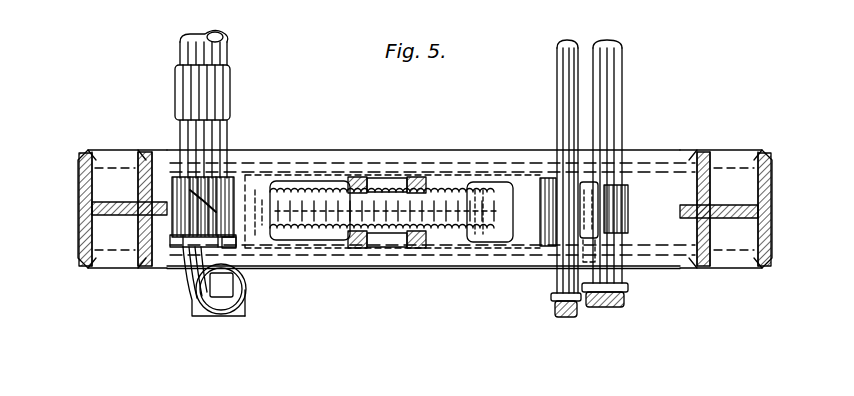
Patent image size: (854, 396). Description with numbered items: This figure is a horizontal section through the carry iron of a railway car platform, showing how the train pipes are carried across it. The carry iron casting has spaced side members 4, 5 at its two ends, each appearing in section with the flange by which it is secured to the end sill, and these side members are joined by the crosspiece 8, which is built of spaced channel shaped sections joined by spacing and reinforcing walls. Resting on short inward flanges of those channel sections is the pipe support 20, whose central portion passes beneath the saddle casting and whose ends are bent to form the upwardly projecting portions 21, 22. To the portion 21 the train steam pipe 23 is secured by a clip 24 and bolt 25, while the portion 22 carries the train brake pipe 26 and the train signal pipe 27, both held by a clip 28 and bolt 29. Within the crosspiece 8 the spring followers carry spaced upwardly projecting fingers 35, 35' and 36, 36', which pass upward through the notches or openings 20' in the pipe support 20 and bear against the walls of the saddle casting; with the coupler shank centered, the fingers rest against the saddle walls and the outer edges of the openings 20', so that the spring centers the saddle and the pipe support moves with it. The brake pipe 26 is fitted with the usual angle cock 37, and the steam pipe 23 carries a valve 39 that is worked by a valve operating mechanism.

The side member 4 is at (80, 200).
The side member 5 is at (772, 211).
The crosspiece 8 is at (392, 262).
The pipe support 20 is at (498, 253).
The notches or openings 20' is at (392, 224).
The upwardly projecting portion 21 is at (214, 186).
The upwardly projecting portion 22 is at (575, 200).
The train steam pipe 23 is at (197, 52).
The clip 24 is at (172, 227).
The bolt 25 is at (233, 250).
The train brake pipe 26 is at (606, 73).
The train signal pipe 27 is at (560, 98).
The clip 28 is at (622, 200).
The bolt 29 is at (548, 200).
The finger 35 is at (425, 271).
The finger 35' is at (428, 159).
The finger 36 is at (346, 271).
The finger 36' is at (350, 159).
The angle cock 37 is at (625, 304).
The valve 39 is at (190, 313).